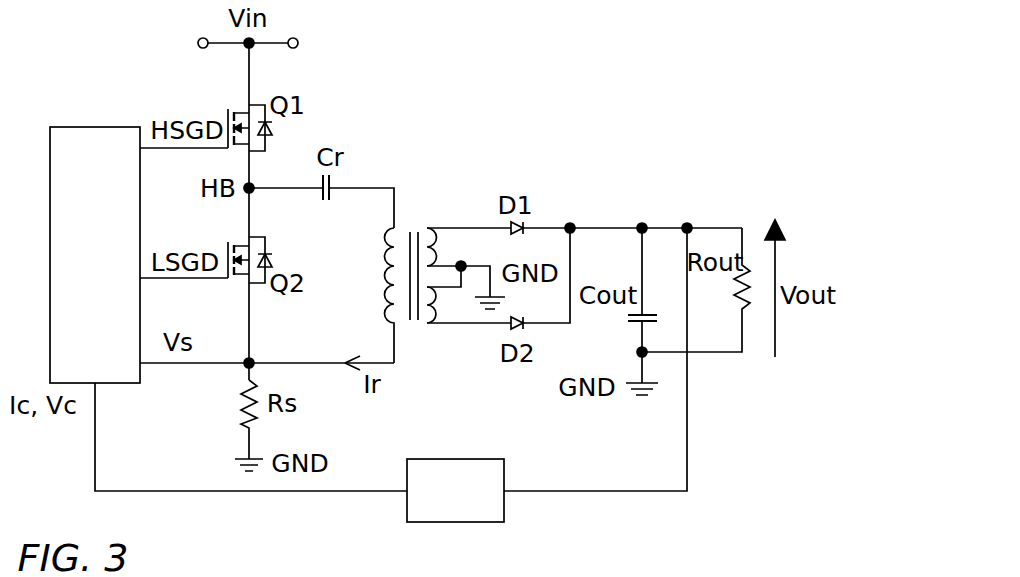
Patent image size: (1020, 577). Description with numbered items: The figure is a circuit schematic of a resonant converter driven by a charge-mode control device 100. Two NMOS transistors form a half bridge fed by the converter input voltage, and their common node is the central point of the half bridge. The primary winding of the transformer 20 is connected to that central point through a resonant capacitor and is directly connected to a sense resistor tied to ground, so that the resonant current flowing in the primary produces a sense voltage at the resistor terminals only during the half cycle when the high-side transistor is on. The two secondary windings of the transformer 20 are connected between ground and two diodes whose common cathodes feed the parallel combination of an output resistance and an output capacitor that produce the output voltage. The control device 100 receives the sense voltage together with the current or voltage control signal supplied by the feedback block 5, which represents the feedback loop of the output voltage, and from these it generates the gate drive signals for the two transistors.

The charge-mode control device 100 is at (115, 383).
The transformer 20 is at (420, 208).
The feedback loop block 5 is at (432, 522).